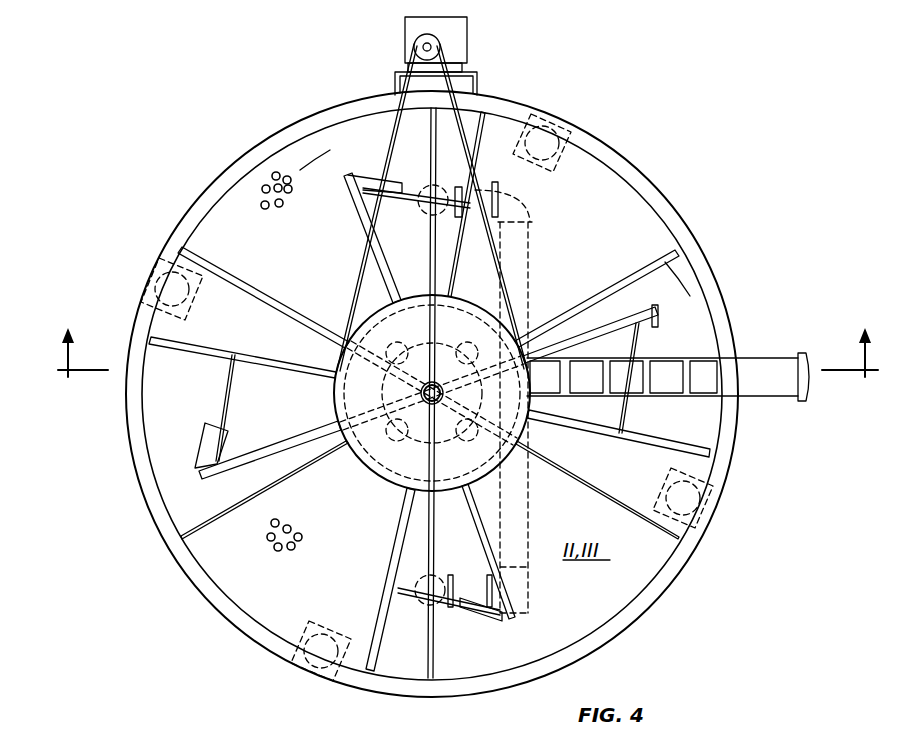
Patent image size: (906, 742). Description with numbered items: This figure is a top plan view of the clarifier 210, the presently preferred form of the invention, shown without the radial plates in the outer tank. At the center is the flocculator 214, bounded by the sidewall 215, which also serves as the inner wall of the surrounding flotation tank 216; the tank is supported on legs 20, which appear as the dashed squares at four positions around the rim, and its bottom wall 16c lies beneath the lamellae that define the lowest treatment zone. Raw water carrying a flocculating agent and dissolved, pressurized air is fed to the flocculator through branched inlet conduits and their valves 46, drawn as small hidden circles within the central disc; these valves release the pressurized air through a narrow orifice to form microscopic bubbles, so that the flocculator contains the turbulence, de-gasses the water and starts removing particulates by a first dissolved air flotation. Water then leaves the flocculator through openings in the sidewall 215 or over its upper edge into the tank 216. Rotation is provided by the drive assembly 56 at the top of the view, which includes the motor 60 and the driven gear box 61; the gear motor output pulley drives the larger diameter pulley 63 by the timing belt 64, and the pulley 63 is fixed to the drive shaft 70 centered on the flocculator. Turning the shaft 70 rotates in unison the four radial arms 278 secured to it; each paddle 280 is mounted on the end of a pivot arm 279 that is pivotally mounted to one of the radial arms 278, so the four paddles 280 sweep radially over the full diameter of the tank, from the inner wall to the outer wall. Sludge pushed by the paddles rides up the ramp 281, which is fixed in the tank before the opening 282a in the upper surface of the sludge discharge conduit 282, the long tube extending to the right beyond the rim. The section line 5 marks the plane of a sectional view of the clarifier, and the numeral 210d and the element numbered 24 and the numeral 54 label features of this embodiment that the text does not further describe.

The section line 5- 5 is at (468, 341).
The bottom wall 16c is at (311, 167).
The legs 20 is at (568, 117).
The container holder 24 is at (531, 275).
The valves 46 is at (398, 354).
The vent holes 54 is at (267, 190).
The drive assembly 56 is at (496, 82).
The motor 60 is at (472, 45).
The driven gear box 61 is at (413, 39).
The pulley 63 is at (390, 500).
The timing belt 64 is at (386, 155).
The drive shaft 70 is at (470, 388).
The clarifier 210 is at (662, 149).
The rotor rim 210d is at (700, 288).
The central flocculator 214 is at (381, 455).
The sidewall 215 is at (369, 506).
The flotation tank 216 is at (618, 234).
The radial arms 278 is at (375, 230).
The pivot arm 279 is at (226, 416).
The paddles 280 is at (498, 175).
The ramp 281 is at (470, 277).
The sludge discharge conduit 282 is at (752, 365).
The opening 282a is at (702, 368).